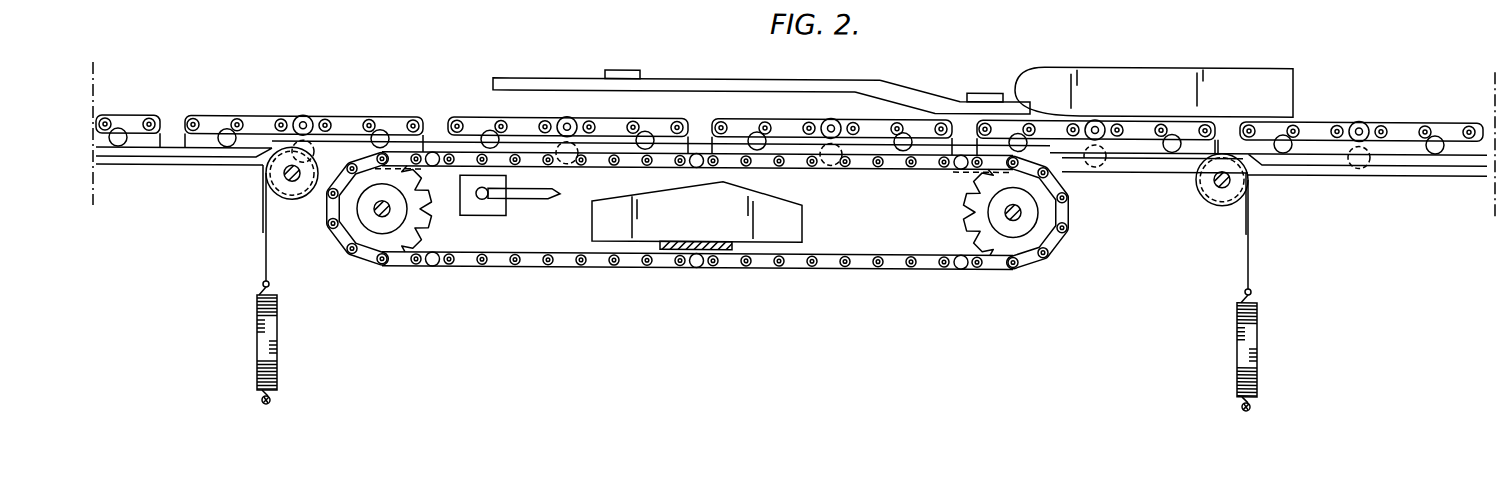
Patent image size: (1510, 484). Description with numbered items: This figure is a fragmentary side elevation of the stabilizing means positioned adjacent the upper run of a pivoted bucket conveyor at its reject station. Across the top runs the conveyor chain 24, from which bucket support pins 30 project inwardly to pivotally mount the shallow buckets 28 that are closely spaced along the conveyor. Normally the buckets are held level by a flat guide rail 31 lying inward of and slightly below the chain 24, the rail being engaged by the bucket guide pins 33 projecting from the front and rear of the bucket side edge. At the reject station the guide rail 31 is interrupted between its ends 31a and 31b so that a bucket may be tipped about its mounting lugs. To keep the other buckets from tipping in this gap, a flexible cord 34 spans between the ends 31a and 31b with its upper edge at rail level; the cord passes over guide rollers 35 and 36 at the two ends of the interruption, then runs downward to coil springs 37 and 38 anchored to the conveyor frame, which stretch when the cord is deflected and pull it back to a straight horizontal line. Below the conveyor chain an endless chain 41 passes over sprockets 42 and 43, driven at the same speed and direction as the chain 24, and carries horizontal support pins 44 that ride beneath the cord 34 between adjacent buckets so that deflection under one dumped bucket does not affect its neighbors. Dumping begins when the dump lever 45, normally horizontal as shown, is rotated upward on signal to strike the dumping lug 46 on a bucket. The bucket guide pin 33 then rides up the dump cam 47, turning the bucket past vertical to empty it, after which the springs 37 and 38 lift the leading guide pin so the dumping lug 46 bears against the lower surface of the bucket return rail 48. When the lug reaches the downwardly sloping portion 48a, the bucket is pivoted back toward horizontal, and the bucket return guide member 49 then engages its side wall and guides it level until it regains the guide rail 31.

The conveyor chain 24 is at (789, 145).
The bucket 28 is at (185, 113).
The bucket support pin 30 is at (303, 114).
The guide rail 31 is at (130, 152).
The end of guide rail 31a is at (263, 168).
The end of guide rail 31b is at (1252, 160).
The bucket guide pin 33 is at (119, 135).
The flexible cord 34 is at (262, 250).
The guide roller 35 is at (292, 199).
The guide roller 36 is at (1226, 199).
The coil spring 37 is at (272, 353).
The coil spring 38 is at (1240, 335).
The endless chain 41 is at (590, 270).
The sprocket 42 is at (433, 236).
The sprocket 43 is at (964, 232).
The support pin 44 is at (433, 165).
The dump lever 45 is at (535, 197).
The dumping lug 46 is at (308, 143).
The dump cam 47 is at (686, 221).
The bucket return rail 48 is at (684, 76).
The downwardly sloping portion 48a is at (906, 98).
The bucket return guide member 49 is at (1157, 62).